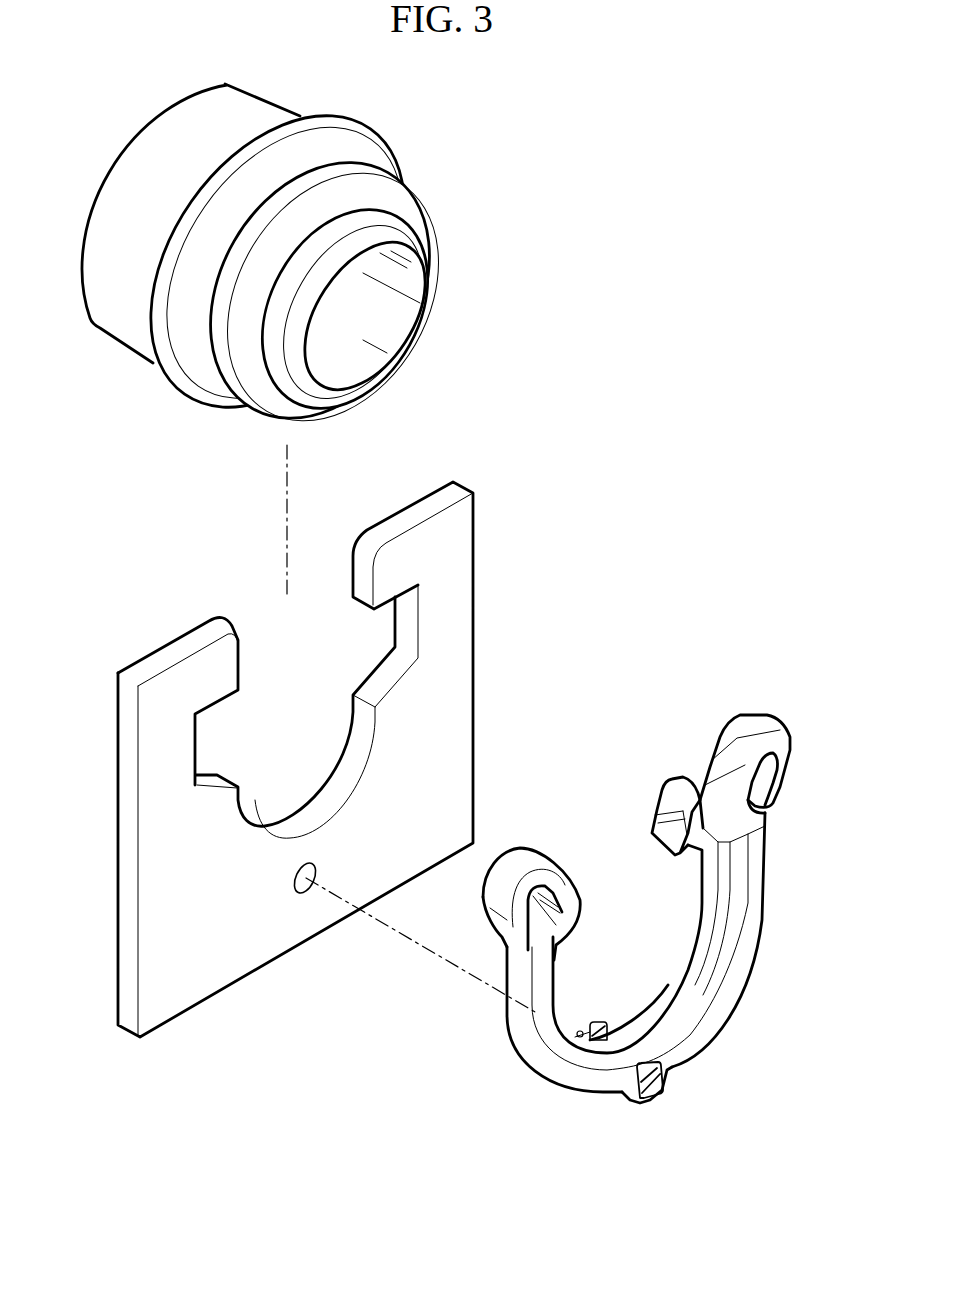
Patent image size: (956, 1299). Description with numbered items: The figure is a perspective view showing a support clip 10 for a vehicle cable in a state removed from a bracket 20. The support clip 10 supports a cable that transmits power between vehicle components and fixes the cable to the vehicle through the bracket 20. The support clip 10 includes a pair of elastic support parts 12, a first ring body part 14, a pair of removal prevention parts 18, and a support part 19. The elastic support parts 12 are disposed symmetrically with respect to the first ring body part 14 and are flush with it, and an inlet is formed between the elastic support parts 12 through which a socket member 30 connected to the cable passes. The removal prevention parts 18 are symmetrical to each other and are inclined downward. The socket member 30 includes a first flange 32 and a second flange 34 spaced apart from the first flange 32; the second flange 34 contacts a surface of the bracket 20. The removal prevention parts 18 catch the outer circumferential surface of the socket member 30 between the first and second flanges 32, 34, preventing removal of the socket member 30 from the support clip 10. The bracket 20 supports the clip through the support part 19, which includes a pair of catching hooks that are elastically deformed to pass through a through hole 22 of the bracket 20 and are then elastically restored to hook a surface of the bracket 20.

The support clip 10 is at (615, 900).
The elastic support parts 12 is at (723, 765).
The first ring body part 14 is at (713, 1027).
The removal prevention parts 18 is at (652, 820).
The support part 19 is at (602, 1034).
The bracket 20 is at (362, 759).
The through hole 22 is at (306, 880).
The socket member 30 is at (315, 259).
The first flange 32 is at (388, 170).
The second flange 34 is at (325, 123).